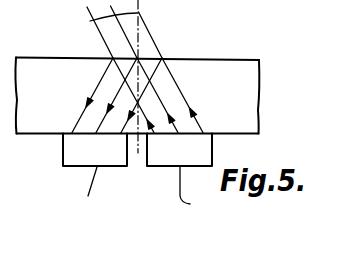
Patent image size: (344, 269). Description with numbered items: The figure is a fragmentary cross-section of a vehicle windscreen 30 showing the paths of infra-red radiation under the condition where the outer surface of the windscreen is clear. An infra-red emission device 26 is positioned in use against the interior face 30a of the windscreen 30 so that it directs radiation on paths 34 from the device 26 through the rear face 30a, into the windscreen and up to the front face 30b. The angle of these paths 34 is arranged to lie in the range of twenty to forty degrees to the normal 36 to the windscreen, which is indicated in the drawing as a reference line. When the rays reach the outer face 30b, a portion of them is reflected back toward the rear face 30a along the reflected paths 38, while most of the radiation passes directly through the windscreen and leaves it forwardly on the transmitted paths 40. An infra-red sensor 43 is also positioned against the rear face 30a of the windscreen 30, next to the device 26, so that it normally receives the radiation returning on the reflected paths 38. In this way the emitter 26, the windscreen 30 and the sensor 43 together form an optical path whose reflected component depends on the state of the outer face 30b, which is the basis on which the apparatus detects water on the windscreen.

The infra-red emission device 26 is at (165, 157).
The vehicle windscreen 30 is at (202, 72).
The interior face of the windscreen 30a is at (255, 134).
The front face of the windscreen 30b is at (248, 59).
The paths of emitted radiation 34 is at (151, 129).
The normal to the windscreen 36 is at (141, 4).
The reflected paths 38 is at (138, 107).
The transmitted paths 40 is at (116, 18).
The infra-red sensor 43 is at (71, 152).